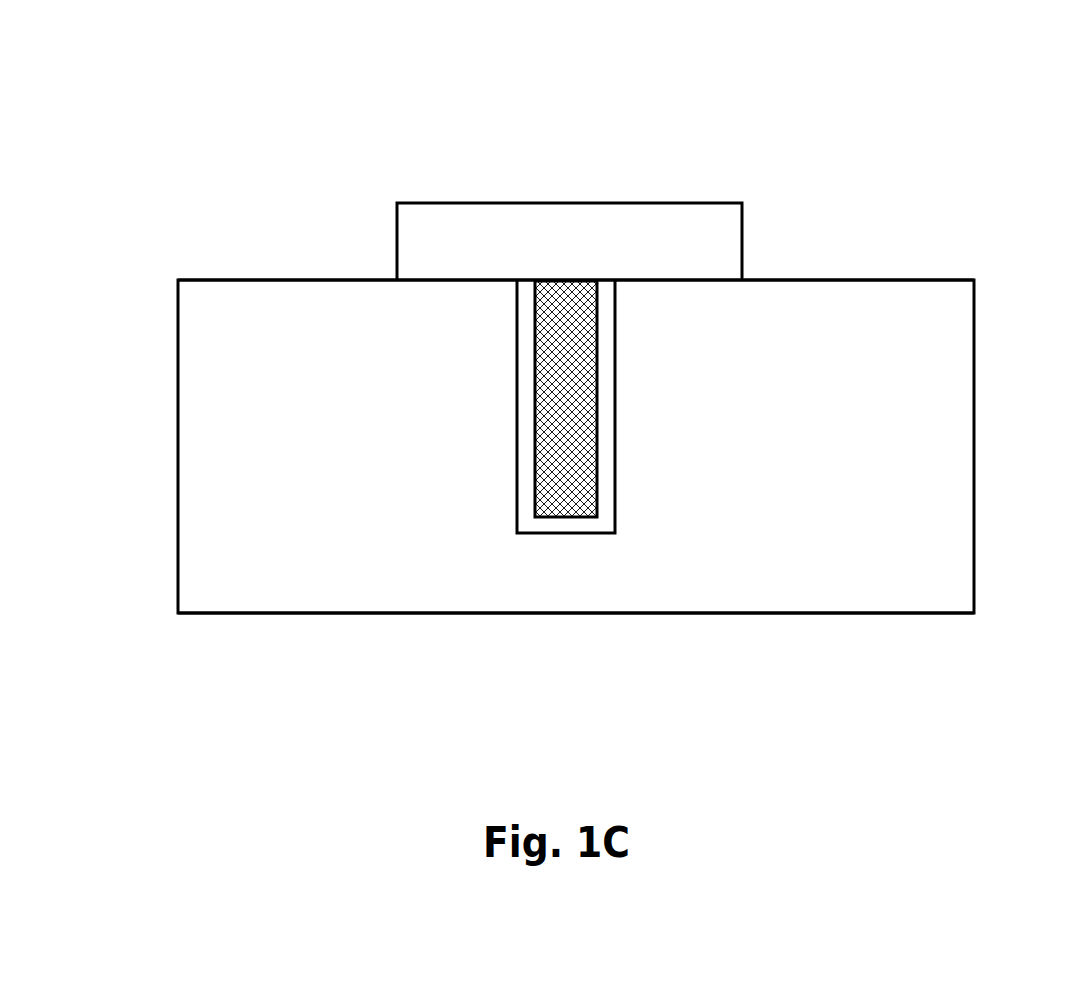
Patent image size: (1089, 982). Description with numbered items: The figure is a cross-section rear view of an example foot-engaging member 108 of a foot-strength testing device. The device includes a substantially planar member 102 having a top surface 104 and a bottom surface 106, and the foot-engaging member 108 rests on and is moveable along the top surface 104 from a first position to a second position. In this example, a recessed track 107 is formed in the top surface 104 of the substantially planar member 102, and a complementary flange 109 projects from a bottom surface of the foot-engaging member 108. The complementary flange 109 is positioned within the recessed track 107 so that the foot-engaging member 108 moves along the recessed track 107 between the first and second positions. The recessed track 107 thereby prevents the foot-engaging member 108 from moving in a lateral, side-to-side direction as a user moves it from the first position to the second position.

The substantially planar member 102 is at (974, 447).
The top surface 104 is at (875, 280).
The bottom surface 106 is at (290, 614).
The recessed track 107 is at (528, 402).
The foot-engaging member 108 is at (657, 203).
The complementary flange 109 is at (552, 481).